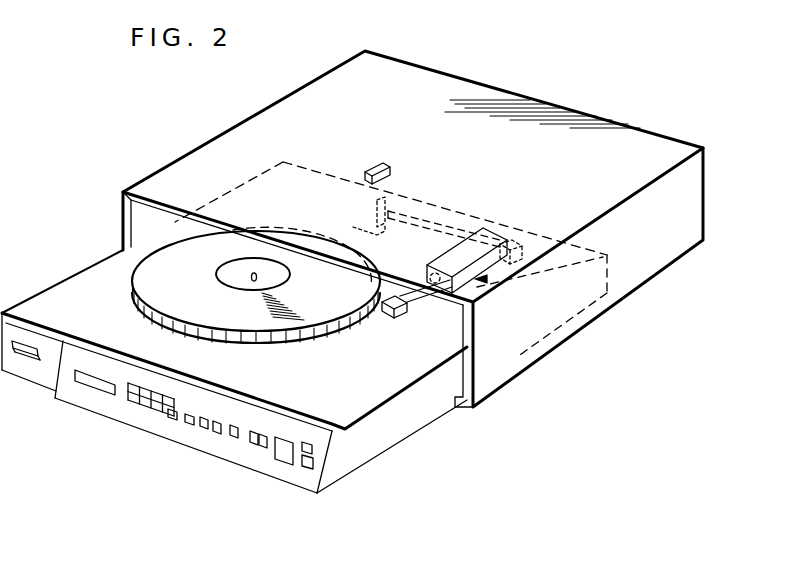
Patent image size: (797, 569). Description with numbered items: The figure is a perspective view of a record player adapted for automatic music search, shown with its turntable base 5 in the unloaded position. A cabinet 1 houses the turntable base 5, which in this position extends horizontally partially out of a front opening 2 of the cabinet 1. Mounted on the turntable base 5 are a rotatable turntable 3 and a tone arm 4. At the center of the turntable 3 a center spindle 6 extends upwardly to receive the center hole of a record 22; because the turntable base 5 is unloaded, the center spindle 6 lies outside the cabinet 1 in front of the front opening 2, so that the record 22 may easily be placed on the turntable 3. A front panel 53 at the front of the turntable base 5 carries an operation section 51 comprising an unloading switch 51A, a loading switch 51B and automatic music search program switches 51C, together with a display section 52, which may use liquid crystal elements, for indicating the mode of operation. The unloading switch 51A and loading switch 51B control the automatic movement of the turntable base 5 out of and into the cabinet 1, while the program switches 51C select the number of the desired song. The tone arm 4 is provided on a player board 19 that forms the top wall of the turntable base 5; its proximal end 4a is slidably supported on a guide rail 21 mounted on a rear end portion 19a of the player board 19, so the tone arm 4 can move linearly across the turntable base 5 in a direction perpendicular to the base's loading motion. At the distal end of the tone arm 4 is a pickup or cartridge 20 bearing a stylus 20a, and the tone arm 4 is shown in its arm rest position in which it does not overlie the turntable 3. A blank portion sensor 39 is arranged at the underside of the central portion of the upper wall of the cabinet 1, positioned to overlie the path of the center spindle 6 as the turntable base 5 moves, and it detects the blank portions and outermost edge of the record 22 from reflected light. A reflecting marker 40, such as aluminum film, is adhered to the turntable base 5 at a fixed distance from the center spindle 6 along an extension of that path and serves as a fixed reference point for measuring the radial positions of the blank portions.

The cabinet 1 is at (218, 150).
The front opening 2 is at (123, 207).
The turntable 3 is at (133, 287).
The tone arm 4 is at (497, 282).
The proximal end 4a is at (497, 222).
The turntable base 5 is at (400, 444).
The center spindle 6 is at (254, 273).
The player board 19 is at (85, 288).
The rear end portion 19a is at (457, 213).
The pickup or cartridge 20 is at (407, 311).
The stylus 20a is at (387, 318).
The guide rail 21 is at (417, 213).
The record 22 is at (327, 305).
The blank portion sensor 39 is at (377, 160).
The reflecting marker 40 is at (357, 225).
The operation section 51 is at (207, 440).
The unloading switch 51A is at (312, 449).
The loading switch 51B is at (306, 467).
The automatic music search program switches 51C is at (140, 405).
The display section 52 is at (90, 382).
The front panel 53 is at (108, 430).